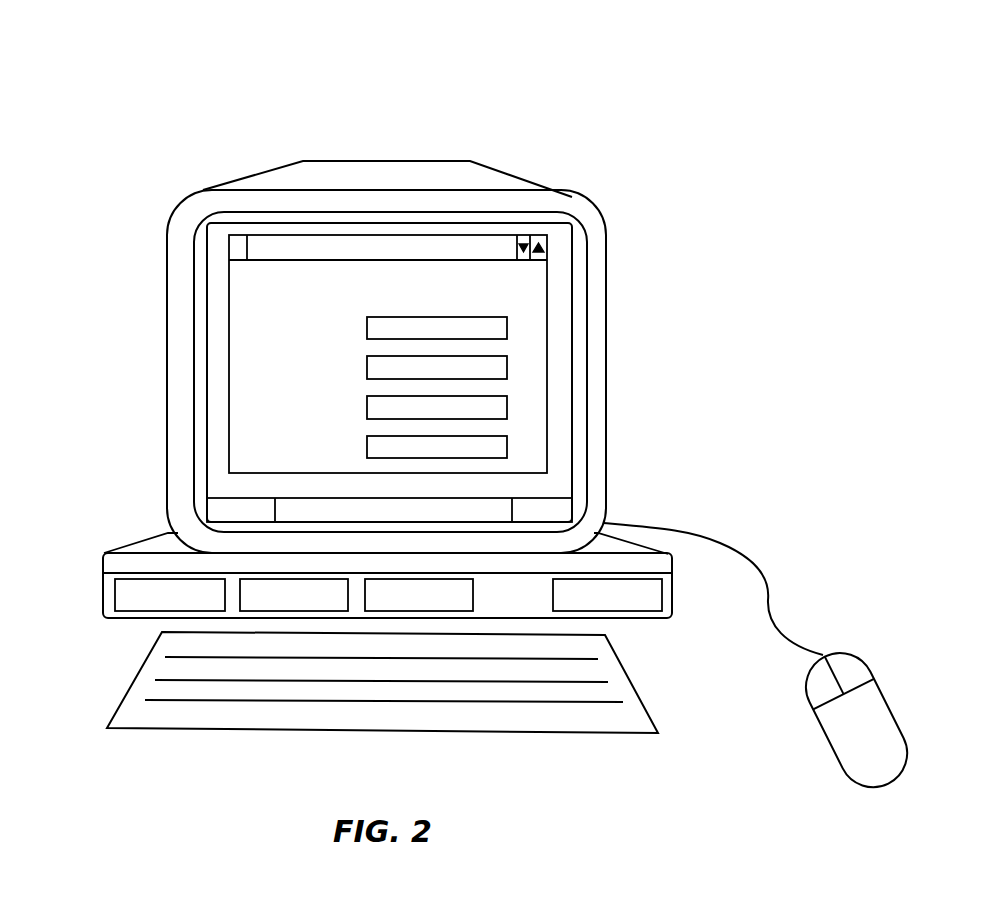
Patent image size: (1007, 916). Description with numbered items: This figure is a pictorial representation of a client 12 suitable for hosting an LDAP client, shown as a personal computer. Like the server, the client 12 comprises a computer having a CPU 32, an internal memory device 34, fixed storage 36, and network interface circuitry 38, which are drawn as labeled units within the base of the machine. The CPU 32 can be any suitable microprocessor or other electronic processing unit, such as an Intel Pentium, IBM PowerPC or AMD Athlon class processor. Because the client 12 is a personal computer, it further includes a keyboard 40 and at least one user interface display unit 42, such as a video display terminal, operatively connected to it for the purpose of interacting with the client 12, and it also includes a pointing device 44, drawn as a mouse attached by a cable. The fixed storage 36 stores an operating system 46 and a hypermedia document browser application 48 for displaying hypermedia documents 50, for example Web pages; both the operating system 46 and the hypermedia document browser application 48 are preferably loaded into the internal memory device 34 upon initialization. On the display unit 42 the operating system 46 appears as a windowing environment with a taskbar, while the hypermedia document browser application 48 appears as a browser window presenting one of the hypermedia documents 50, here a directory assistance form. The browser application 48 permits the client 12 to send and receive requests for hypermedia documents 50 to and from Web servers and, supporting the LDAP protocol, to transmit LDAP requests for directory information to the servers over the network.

The client 12 is at (164, 98).
The CPU 32 is at (137, 592).
The internal memory device 34 is at (255, 603).
The fixed storage 36 is at (445, 605).
The network interface circuitry 38 is at (635, 595).
The keyboard 40 is at (242, 736).
The user interface display unit 42 is at (392, 169).
The pointing device 44 is at (855, 668).
The operating system 46 is at (205, 483).
The hypermedia document browser application 48 is at (508, 248).
The hypermedia documents 50 is at (530, 333).